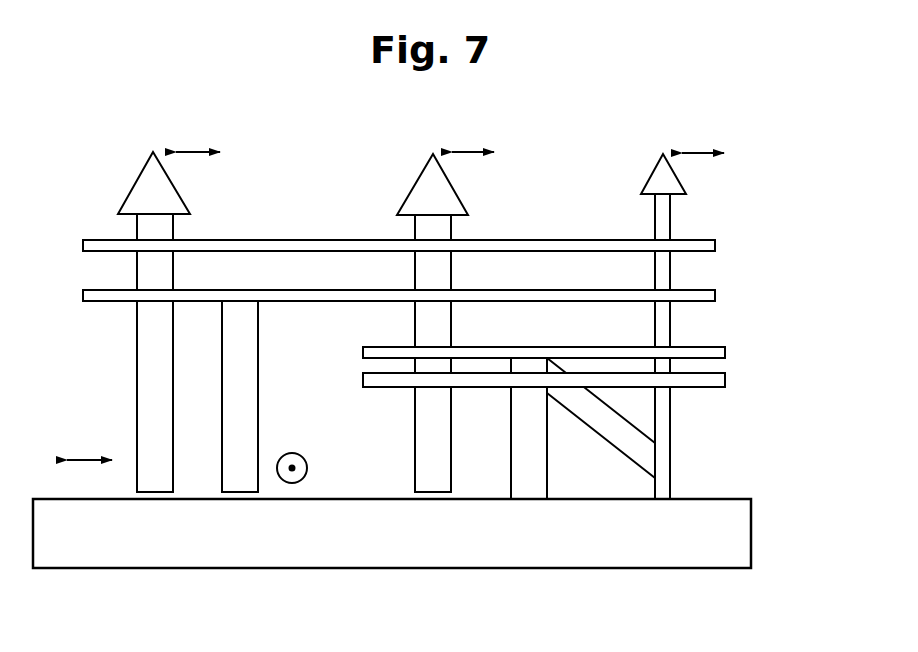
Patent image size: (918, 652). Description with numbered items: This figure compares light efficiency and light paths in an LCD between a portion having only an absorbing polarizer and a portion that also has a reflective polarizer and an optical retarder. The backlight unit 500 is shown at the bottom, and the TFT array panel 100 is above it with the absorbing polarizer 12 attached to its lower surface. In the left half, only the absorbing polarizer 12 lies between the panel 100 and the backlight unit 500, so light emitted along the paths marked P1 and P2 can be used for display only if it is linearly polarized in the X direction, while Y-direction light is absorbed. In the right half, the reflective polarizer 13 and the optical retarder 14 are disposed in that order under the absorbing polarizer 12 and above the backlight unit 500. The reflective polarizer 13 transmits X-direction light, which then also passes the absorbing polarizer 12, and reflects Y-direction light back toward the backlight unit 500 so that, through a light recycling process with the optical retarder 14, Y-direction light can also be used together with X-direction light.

The TFT array panel 100 is at (715, 247).
The absorbing polarizer 12 is at (715, 297).
The reflective polarizer 13 is at (725, 352).
The optical retarder 14 is at (725, 380).
The backlight unit 500 is at (751, 535).
The first pillar P1 is at (169, 322).
The second pillar P2 is at (240, 396).